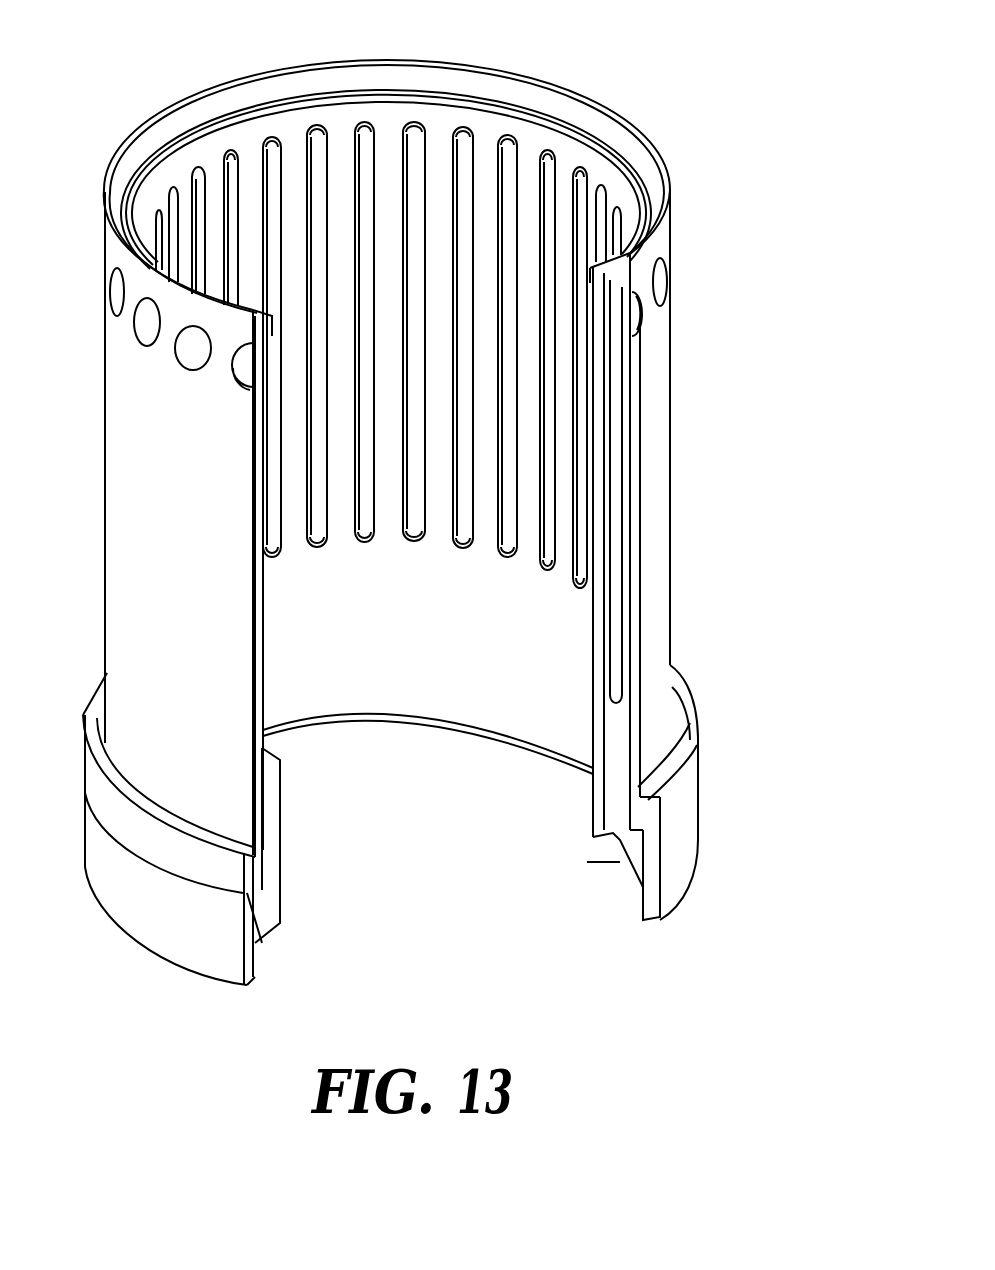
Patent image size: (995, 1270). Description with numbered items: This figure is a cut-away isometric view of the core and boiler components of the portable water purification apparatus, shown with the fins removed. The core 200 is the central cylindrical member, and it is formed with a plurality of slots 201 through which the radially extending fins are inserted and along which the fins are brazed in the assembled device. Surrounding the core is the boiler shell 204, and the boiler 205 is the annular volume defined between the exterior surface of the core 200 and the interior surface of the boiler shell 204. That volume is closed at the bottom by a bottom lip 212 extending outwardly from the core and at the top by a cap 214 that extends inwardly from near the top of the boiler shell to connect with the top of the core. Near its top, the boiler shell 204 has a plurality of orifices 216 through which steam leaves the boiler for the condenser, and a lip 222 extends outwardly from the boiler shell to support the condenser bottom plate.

The core 200 is at (597, 699).
The slots 201 is at (427, 138).
The boiler shell 204 is at (662, 872).
The boiler 205 is at (620, 728).
The bottom lip 212 is at (620, 862).
The cap 214 is at (597, 267).
The orifices 216 is at (668, 291).
The lip 222 is at (650, 812).